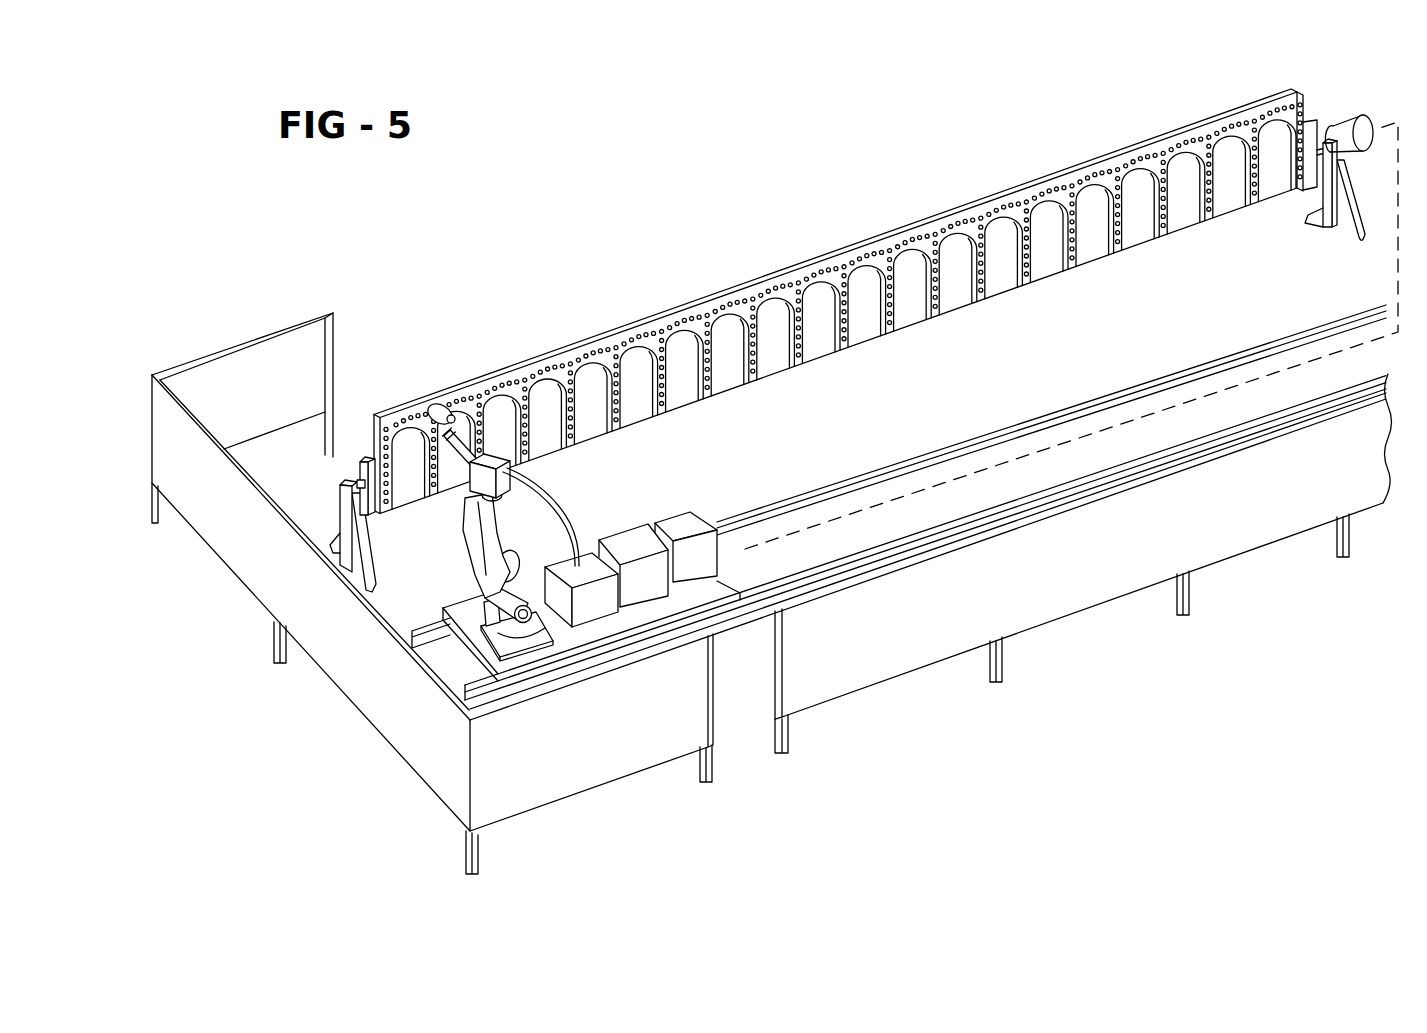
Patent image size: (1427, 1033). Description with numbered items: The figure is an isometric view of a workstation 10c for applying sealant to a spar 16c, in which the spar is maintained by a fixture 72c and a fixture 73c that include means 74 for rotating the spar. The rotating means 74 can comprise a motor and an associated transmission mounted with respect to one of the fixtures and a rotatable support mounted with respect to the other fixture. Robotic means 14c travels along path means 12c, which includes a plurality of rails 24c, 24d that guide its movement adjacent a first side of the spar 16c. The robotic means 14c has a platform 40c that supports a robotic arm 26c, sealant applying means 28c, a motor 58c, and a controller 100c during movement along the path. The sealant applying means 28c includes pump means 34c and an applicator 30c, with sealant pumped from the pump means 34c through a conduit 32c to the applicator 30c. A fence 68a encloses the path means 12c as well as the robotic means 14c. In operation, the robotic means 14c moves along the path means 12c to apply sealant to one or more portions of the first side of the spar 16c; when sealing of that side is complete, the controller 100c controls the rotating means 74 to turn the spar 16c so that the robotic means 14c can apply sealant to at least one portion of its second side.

The workstation 10c is at (885, 203).
The path means 12c is at (1245, 343).
The robotic means 14c is at (457, 644).
The spar 16c is at (1003, 191).
The rail 24c is at (1101, 398).
The rail 24d is at (1035, 500).
The robotic arm 26c is at (477, 540).
The sealant applying means 28c is at (539, 491).
The applicator 30c is at (428, 408).
The supply cable 32c is at (563, 516).
The pump means 34c is at (590, 603).
The platform 40c is at (545, 657).
The motor 58c is at (653, 585).
The fence 68a is at (1047, 575).
The fixture 72c is at (1347, 220).
The fixture 73c is at (347, 500).
The means for rotating the spar 74 is at (1340, 122).
The controller 100c is at (689, 514).